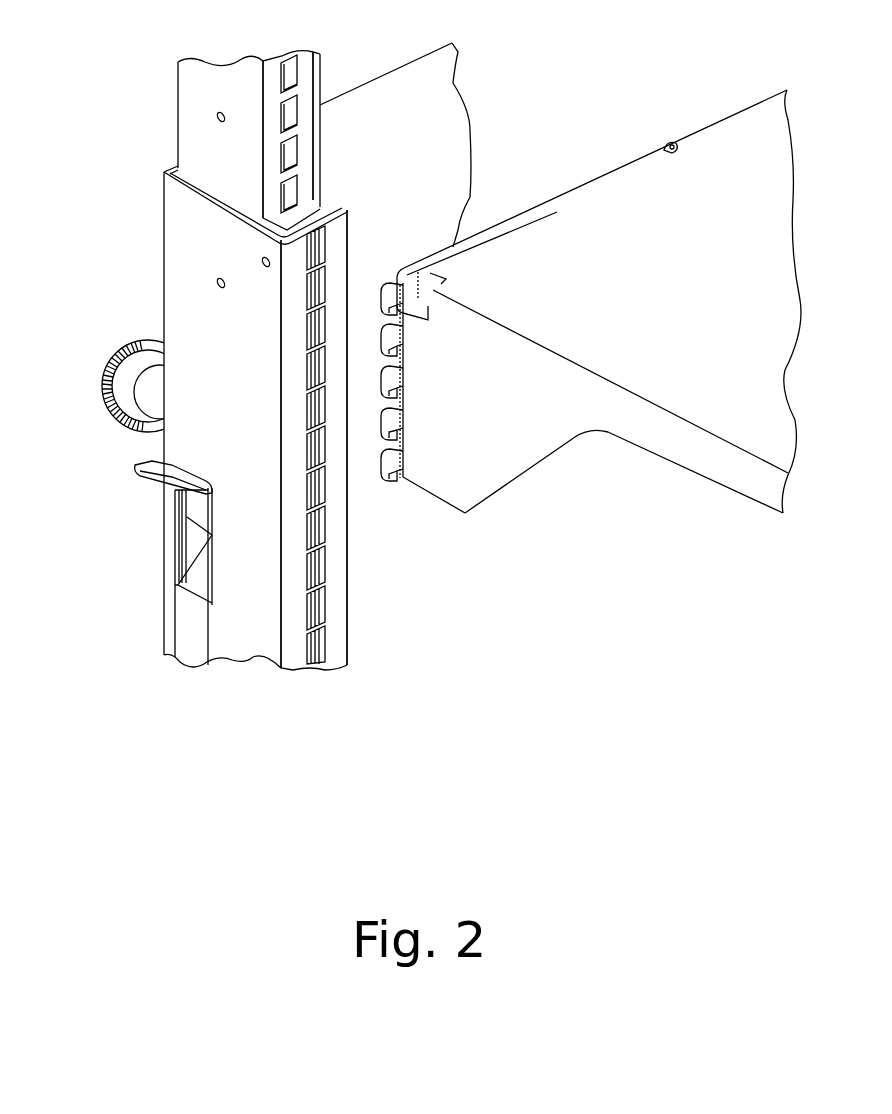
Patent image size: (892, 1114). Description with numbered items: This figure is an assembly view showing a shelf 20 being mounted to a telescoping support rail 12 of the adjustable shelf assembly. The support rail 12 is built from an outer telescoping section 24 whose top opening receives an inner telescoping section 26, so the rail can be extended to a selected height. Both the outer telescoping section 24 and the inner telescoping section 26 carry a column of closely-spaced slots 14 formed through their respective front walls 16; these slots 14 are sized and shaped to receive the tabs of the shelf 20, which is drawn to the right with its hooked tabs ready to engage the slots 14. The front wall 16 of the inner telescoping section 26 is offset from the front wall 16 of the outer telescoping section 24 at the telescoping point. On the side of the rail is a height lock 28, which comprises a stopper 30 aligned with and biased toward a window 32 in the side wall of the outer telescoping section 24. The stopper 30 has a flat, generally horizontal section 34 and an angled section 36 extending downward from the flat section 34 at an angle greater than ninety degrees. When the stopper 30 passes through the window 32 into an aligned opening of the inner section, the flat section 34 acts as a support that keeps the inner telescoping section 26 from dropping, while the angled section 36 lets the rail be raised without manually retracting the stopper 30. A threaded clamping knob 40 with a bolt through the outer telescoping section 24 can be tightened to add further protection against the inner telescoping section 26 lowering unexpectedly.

The support rail 12 is at (153, 145).
The slots 14 is at (287, 78).
The front wall 16 is at (273, 73).
The shelf 20 is at (700, 390).
The outer telescoping section 24 is at (180, 243).
The inner telescoping section 26 is at (183, 85).
The height lock 28 is at (135, 507).
The stopper 30 is at (155, 464).
The window 32 is at (211, 603).
The flat section 34 is at (202, 532).
The angled section 36 is at (197, 588).
The clamping knob 40 is at (120, 373).